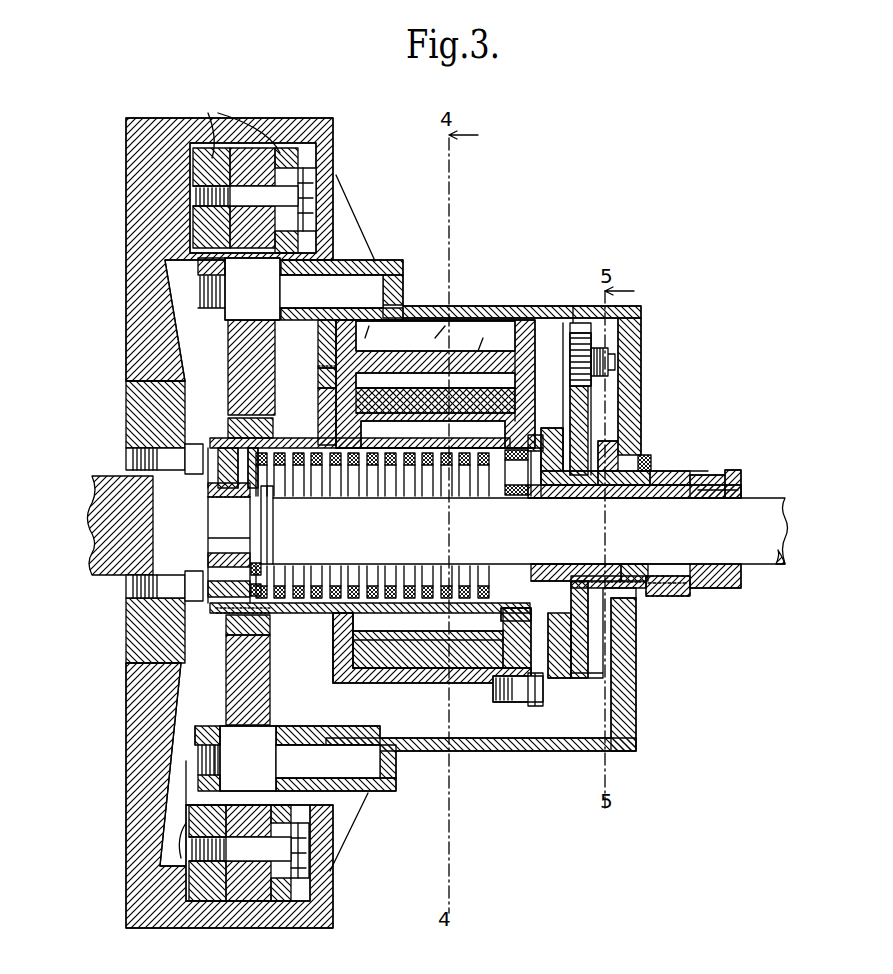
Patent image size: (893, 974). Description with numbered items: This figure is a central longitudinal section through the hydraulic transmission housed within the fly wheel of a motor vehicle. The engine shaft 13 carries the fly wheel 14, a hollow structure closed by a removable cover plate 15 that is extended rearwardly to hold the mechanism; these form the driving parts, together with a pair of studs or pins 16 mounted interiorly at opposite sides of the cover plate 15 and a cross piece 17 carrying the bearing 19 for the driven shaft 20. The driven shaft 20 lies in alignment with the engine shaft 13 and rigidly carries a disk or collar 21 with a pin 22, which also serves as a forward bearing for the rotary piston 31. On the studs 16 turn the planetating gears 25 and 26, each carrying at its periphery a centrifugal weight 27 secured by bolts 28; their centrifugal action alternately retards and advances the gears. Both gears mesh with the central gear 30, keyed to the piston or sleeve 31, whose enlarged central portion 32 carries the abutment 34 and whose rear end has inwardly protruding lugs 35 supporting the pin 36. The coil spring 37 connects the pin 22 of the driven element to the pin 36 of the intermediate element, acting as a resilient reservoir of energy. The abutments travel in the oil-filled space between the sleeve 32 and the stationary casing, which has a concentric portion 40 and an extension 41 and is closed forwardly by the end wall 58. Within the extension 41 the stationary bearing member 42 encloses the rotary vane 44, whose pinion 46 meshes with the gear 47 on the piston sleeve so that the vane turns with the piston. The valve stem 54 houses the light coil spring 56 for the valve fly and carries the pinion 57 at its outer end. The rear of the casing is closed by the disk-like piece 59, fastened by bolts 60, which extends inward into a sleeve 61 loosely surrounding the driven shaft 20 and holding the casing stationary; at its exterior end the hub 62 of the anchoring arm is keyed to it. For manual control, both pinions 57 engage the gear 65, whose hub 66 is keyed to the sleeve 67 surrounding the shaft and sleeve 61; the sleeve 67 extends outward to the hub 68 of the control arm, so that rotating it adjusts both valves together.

The engine shaft 13 is at (108, 525).
The fly wheel 14 is at (213, 523).
The cover plate 15 is at (388, 783).
The studs or pins 16 is at (289, 524).
The cross piece 17 is at (182, 545).
The bearing 19 is at (229, 550).
The driven shaft 20 is at (530, 531).
The disk or collar 21 is at (233, 481).
The pin 22 is at (258, 533).
The rotary gear 25 is at (218, 685).
The rotary gear 26 is at (220, 343).
The centrifugal weight 27 is at (219, 480).
The bolts 28 is at (252, 524).
The central gear 30 is at (232, 430).
The rotary piston or sleeve 31 is at (285, 625).
The enlarged central portion of piston 32 is at (390, 630).
The lug or abutment 34 is at (328, 377).
The inwardly protruding lugs 35 is at (520, 447).
The pin 36 is at (500, 487).
The coil spring 37 is at (400, 480).
The concentric portion of casing 40 is at (420, 675).
The casing extension 41 is at (426, 336).
The stationary bearing member 42 is at (469, 341).
The rotary vane or pass 44 is at (372, 337).
The pinion 46 is at (310, 338).
The gear 47 is at (312, 432).
The cylindrical member 54 is at (562, 350).
The coil spring 56 is at (603, 352).
The pinion 57 is at (603, 379).
The end wall 58 is at (328, 640).
The disk-like piece 59 is at (520, 298).
The bolts 60 is at (525, 695).
The sleeve 61 is at (678, 558).
The hub 62 is at (698, 582).
The gear 65 is at (572, 670).
The hub 66 is at (628, 640).
The sleeve 67 is at (645, 558).
The hub 68 is at (658, 590).